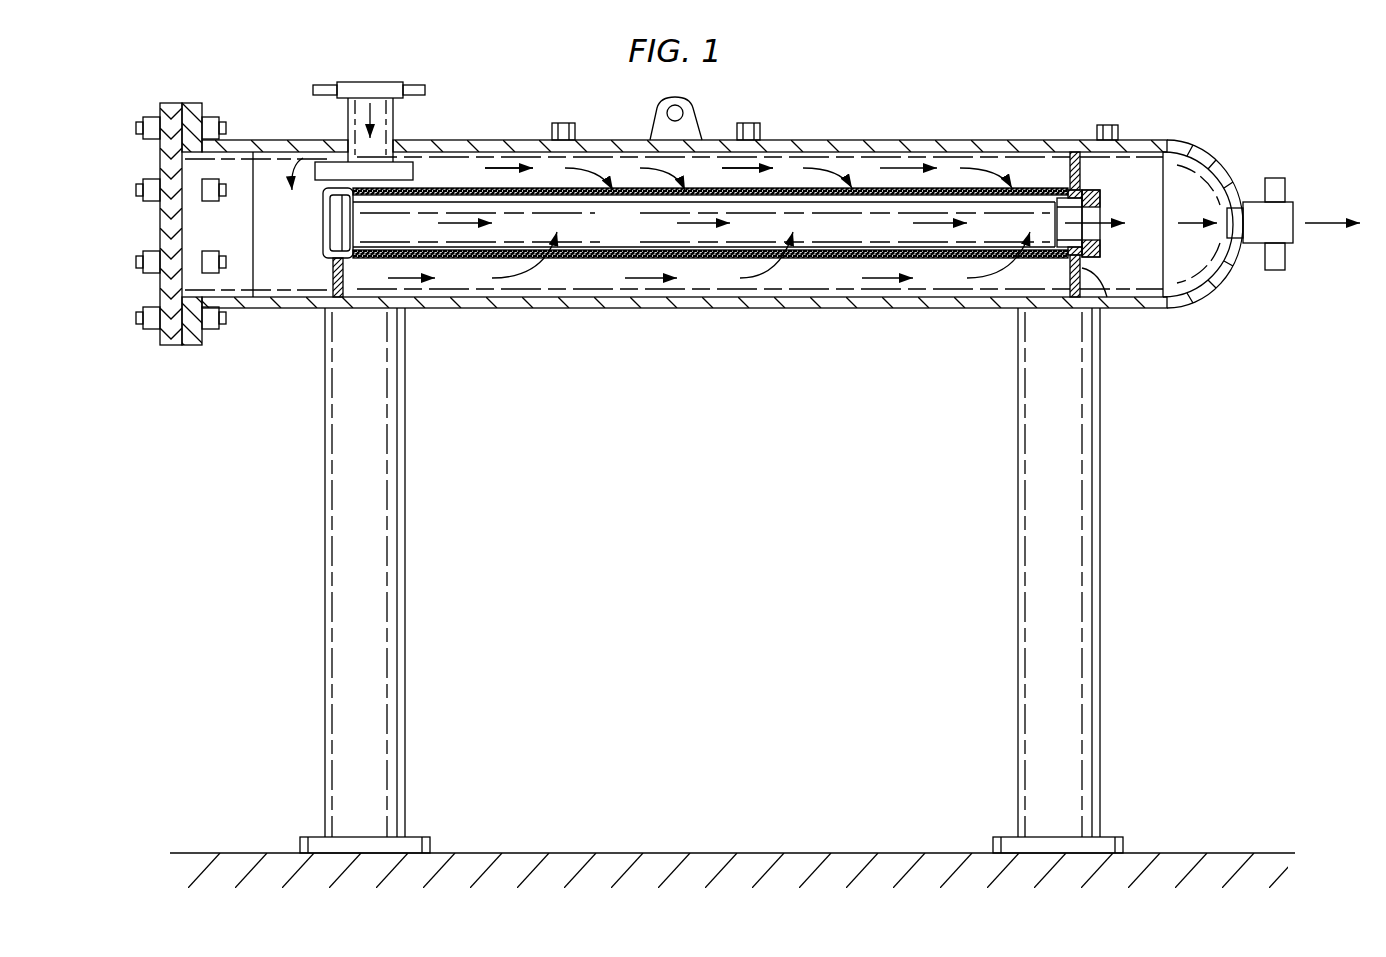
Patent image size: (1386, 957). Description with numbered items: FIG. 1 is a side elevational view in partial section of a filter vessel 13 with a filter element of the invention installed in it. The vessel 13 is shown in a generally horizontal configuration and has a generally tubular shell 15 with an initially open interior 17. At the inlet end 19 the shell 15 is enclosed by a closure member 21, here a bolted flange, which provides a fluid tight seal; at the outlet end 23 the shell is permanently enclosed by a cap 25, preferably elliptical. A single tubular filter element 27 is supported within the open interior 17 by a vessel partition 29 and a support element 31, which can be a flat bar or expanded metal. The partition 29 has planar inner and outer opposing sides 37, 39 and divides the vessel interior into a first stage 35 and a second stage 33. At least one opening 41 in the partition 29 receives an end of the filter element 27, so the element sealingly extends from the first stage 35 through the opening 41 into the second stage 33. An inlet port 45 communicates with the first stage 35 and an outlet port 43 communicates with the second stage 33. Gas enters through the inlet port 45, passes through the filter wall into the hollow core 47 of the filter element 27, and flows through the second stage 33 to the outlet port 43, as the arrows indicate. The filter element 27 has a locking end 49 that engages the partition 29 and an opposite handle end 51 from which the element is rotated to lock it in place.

The vessel 13 is at (893, 98).
The tubular shell 15 is at (810, 139).
The open interior 17 is at (492, 150).
The inlet end 19 is at (273, 138).
The closure member 21 is at (172, 102).
The outlet end 23 is at (1165, 140).
The cap 25 is at (1232, 278).
The filter element 27 is at (690, 257).
The vessel partition 29 is at (1090, 270).
The support element 31 is at (333, 276).
The second stage 33 is at (1122, 207).
The first stage 35 is at (818, 268).
The planar inner side 37 is at (1072, 150).
The planar outer side 39 is at (1087, 140).
The opening 41 is at (1066, 182).
The outlet port 43 is at (1272, 177).
The inlet port 45 is at (370, 82).
The hollow core 47 is at (605, 235).
The locking end 49 is at (1117, 240).
The handle end 51 is at (310, 222).